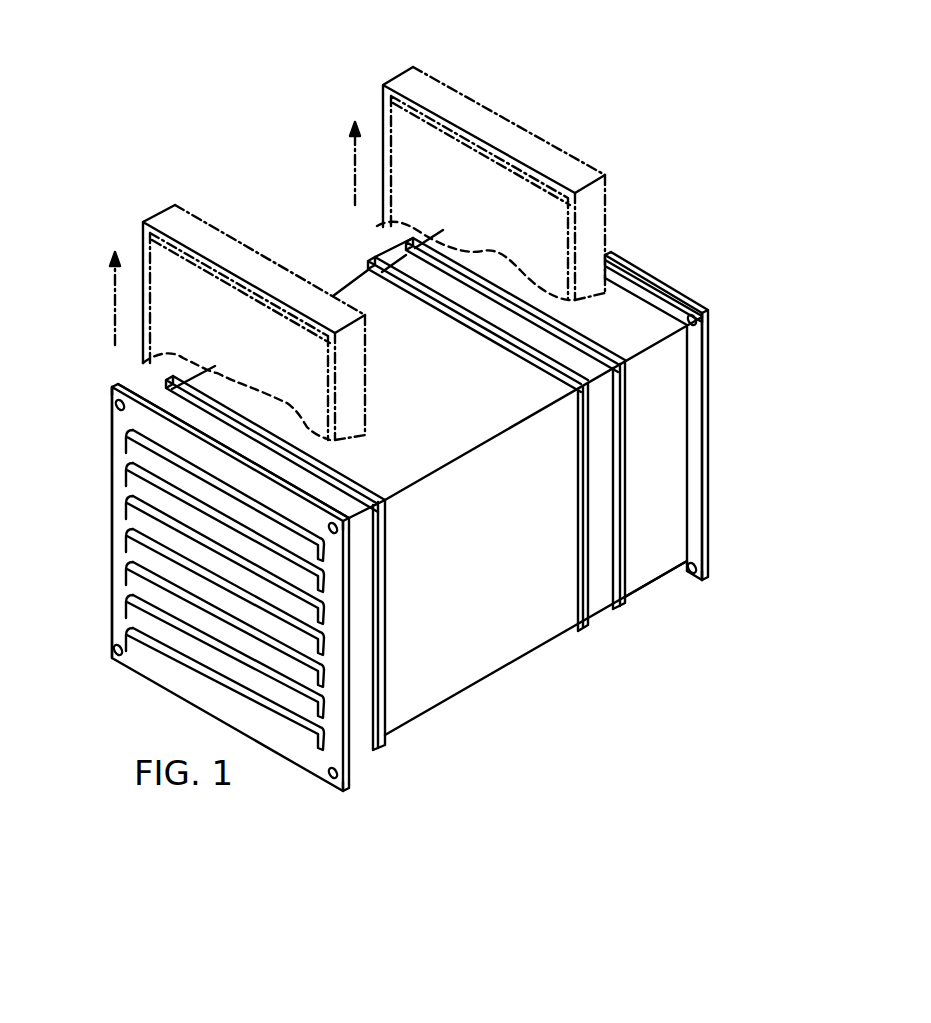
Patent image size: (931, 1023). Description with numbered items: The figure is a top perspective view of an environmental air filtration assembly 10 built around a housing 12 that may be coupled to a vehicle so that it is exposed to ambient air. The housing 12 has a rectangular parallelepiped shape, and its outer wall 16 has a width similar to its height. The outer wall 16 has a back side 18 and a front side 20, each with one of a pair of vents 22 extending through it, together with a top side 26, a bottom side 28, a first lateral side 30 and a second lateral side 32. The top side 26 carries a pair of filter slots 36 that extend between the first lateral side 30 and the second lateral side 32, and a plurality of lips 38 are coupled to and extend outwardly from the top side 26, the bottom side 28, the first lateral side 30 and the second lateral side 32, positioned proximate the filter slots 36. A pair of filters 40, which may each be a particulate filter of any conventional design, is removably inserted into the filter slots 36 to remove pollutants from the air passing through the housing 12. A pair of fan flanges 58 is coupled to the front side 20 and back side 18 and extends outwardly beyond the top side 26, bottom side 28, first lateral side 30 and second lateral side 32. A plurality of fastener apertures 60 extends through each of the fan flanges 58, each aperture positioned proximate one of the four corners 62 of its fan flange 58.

The environmental air filtration assembly 10 is at (640, 90).
The housing 12 is at (500, 695).
The outer wall 16 is at (655, 574).
The back side 18 is at (706, 402).
The front side 20 is at (322, 778).
The vents 22 is at (124, 566).
The top side 26 is at (357, 285).
The bottom side 28 is at (441, 709).
The first lateral side 30 is at (148, 396).
The second lateral side 32 is at (532, 620).
The filter slots 36 is at (170, 428).
The lips 38 is at (378, 752).
The filters 40 is at (208, 222).
The fan flanges 58 is at (110, 606).
The fastener apertures 60 is at (110, 662).
The corners 62 is at (111, 388).